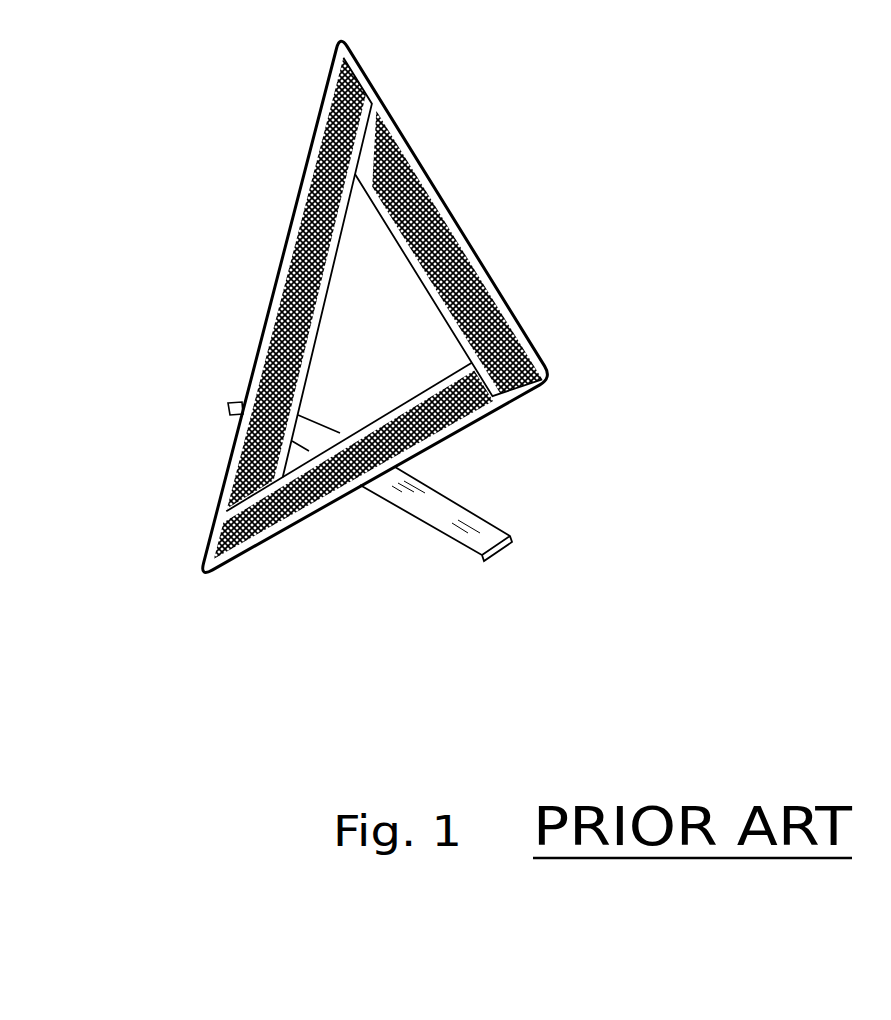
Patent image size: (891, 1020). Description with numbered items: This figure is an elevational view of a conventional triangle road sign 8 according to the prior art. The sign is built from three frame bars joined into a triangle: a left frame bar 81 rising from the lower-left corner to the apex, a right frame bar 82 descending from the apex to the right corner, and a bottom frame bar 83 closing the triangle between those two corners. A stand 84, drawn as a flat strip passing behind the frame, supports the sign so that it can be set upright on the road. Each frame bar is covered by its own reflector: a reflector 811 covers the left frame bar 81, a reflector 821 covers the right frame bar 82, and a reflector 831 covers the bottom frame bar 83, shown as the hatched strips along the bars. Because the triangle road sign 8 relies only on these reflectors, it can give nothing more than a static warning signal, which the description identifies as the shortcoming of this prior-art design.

The triangle road sign 8 is at (438, 168).
The left frame bar 81 is at (236, 283).
The reflector 811 is at (233, 283).
The right frame bar 82 is at (533, 253).
The reflector 821 is at (443, 238).
The bottom frame bar 83 is at (353, 529).
The reflector 831 is at (290, 503).
The stand 84 is at (482, 513).